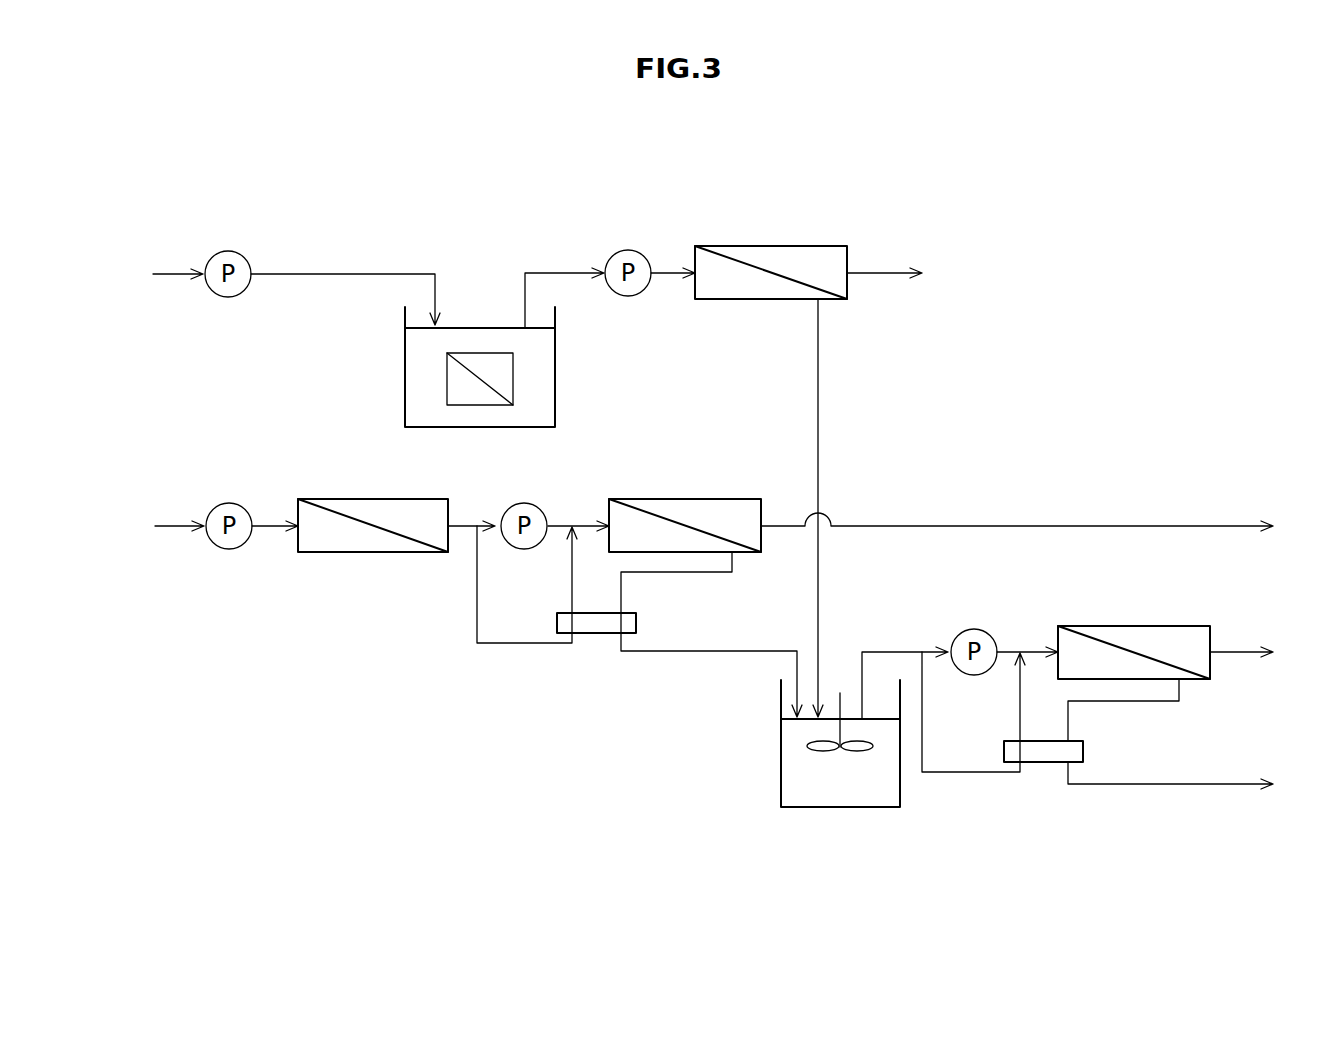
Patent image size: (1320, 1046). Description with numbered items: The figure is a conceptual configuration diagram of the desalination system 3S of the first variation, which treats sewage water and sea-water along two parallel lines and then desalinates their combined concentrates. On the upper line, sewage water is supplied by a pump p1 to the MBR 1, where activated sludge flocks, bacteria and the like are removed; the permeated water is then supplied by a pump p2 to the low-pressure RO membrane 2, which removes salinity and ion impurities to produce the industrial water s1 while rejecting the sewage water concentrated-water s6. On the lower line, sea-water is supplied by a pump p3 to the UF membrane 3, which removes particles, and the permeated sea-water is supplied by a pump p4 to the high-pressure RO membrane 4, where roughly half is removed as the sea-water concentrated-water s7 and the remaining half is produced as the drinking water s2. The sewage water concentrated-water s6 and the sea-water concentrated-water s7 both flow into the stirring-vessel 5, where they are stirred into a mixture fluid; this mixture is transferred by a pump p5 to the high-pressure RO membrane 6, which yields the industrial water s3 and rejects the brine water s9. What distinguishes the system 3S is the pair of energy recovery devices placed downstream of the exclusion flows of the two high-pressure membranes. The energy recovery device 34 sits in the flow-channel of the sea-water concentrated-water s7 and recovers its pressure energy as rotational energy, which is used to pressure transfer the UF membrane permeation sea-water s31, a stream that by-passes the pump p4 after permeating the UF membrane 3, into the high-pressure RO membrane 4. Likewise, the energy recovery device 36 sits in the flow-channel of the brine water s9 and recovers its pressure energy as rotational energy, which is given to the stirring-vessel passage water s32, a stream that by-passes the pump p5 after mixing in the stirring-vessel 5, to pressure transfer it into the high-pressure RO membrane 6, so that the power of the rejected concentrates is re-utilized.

The desalination system 3S is at (952, 162).
The MBR 1 is at (405, 365).
The low-pressure RO membrane 2 is at (713, 246).
The UF membrane 3 is at (340, 499).
The high-pressure RO membrane 4 is at (628, 499).
The stirring-vessel 5 is at (781, 760).
The high-pressure RO membrane 6 is at (1075, 626).
The pump p1 is at (230, 251).
The pump p2 is at (631, 250).
The pump p3 is at (231, 503).
The pump p4 is at (527, 502).
The pump p5 is at (978, 629).
The energy recovery device 34 is at (596, 634).
The energy recovery device 36 is at (1040, 763).
The industrial water s1 is at (900, 274).
The drinking water s2 is at (1034, 526).
The industrial water s3 is at (1257, 654).
The sewage water concentrated-water s6 is at (818, 388).
The sea-water concentrated-water s7 is at (671, 572).
The brine water s9 is at (1186, 738).
The UF membrane permeation sea-water s31 is at (476, 603).
The stirring-vessel passage water s32 is at (922, 712).